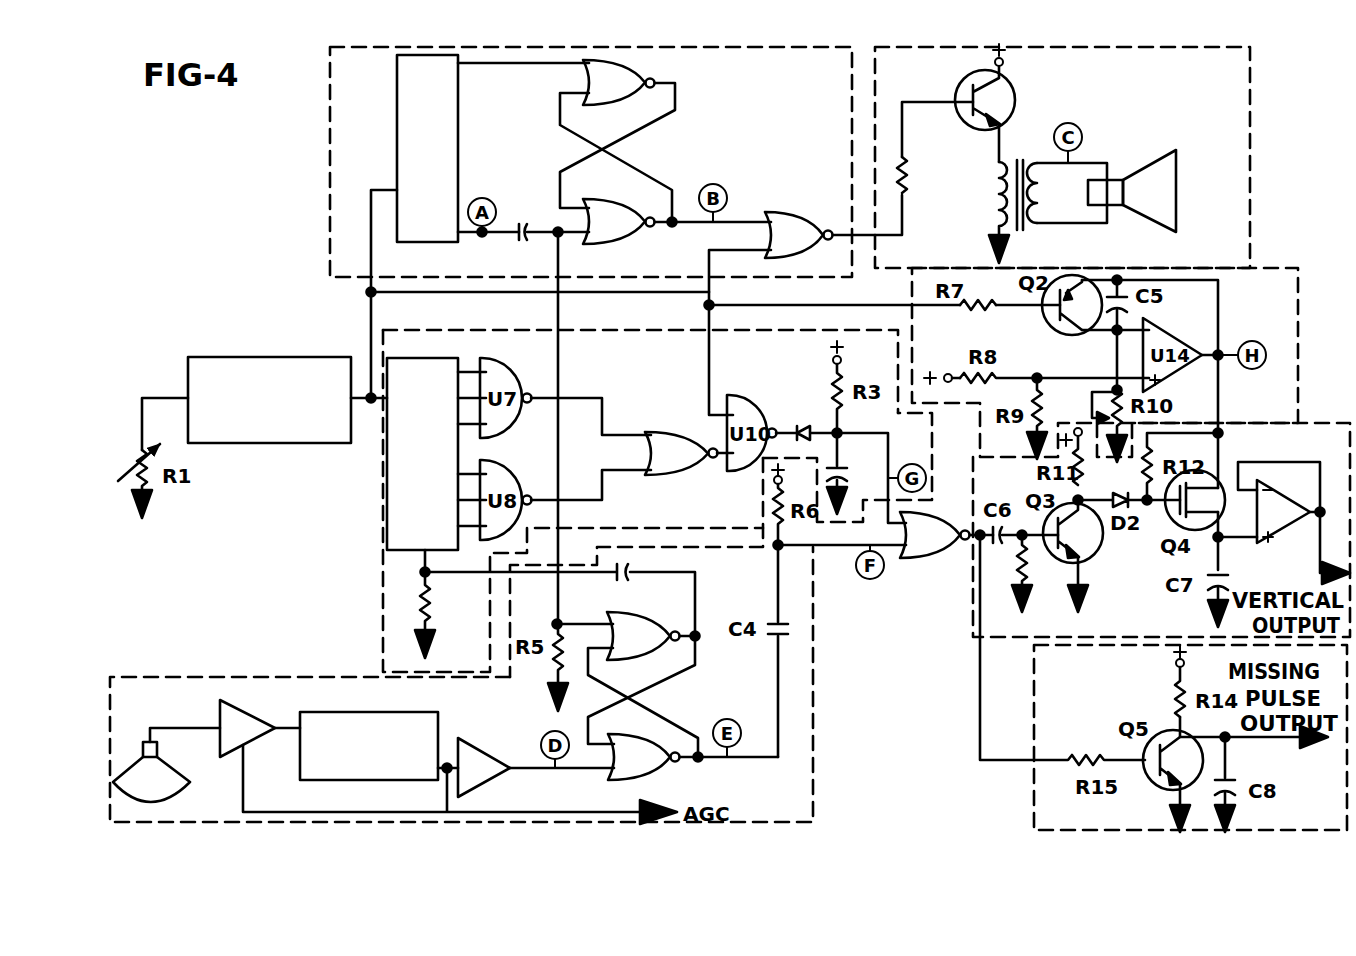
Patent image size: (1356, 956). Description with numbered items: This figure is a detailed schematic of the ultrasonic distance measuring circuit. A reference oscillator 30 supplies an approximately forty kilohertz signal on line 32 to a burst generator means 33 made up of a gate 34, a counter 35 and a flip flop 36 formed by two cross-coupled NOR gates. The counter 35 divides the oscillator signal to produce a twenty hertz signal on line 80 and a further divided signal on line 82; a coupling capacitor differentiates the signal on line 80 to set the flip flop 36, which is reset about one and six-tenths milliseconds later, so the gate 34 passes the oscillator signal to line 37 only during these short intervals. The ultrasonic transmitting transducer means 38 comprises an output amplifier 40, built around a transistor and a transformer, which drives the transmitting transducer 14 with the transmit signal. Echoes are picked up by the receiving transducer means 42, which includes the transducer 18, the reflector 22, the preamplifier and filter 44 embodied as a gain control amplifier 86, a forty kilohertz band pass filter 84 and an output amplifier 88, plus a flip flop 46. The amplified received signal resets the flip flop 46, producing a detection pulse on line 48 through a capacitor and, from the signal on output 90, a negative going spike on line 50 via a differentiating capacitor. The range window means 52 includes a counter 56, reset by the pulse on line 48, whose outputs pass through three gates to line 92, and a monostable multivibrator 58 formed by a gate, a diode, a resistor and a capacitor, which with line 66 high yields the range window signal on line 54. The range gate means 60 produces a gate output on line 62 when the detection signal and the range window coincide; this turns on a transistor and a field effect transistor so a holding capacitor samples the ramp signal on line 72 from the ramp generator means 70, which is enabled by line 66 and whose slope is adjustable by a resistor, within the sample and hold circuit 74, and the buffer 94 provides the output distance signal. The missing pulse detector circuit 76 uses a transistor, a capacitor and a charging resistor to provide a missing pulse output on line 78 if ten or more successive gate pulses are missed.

The transmitting transducer 14 is at (1177, 180).
The receiving transducer 18 is at (160, 743).
The reflector 22 is at (183, 786).
The oscillator 30 is at (282, 357).
The line 32 is at (356, 400).
The burst generator means 33 is at (330, 134).
The gate 34 is at (790, 212).
The counter 35 is at (459, 125).
The flip flop 36 is at (668, 133).
The line 37 is at (862, 250).
The ultrasonic transmitting transducer means 38 is at (1251, 153).
The output amplifier 40 is at (1060, 110).
The ultrasonic receiving transducer means 42 is at (815, 758).
The preamplifier and filter 44 is at (497, 790).
The flip flop 46 is at (663, 688).
The line 48 is at (488, 579).
The line 50 is at (828, 558).
The range window means 52 is at (383, 600).
The line 54 is at (870, 519).
The counter 56 is at (440, 358).
The monostable multivibrator 58 is at (802, 386).
The range gate means 60 is at (958, 557).
The line 62 is at (977, 527).
The line 66 is at (880, 306).
The ramp generator means 70 is at (1263, 268).
The line 72 is at (1219, 423).
The sample and hold circuit 74 is at (1305, 425).
The missing pulse detector circuit 76 is at (1034, 673).
The line 78 is at (1278, 746).
The line 80 is at (486, 237).
The line 82 is at (540, 64).
The band pass filter 84 is at (376, 712).
The gain control amplifier 86 is at (222, 718).
The output amplifier 88 is at (486, 742).
The output 90 is at (755, 760).
The line 92 is at (719, 461).
The buffer 94 is at (1302, 531).